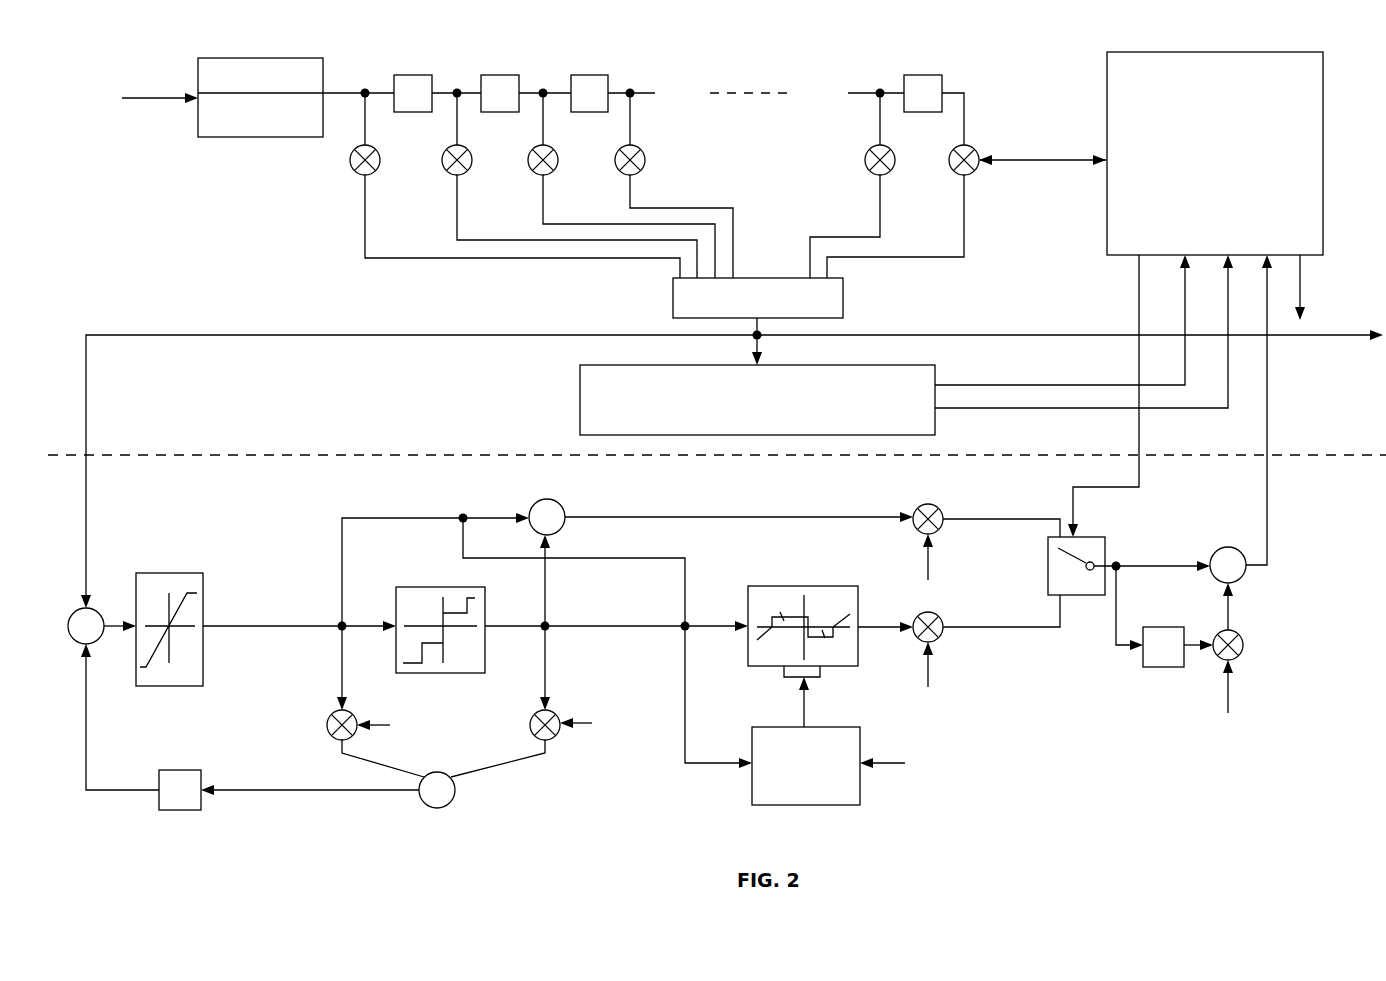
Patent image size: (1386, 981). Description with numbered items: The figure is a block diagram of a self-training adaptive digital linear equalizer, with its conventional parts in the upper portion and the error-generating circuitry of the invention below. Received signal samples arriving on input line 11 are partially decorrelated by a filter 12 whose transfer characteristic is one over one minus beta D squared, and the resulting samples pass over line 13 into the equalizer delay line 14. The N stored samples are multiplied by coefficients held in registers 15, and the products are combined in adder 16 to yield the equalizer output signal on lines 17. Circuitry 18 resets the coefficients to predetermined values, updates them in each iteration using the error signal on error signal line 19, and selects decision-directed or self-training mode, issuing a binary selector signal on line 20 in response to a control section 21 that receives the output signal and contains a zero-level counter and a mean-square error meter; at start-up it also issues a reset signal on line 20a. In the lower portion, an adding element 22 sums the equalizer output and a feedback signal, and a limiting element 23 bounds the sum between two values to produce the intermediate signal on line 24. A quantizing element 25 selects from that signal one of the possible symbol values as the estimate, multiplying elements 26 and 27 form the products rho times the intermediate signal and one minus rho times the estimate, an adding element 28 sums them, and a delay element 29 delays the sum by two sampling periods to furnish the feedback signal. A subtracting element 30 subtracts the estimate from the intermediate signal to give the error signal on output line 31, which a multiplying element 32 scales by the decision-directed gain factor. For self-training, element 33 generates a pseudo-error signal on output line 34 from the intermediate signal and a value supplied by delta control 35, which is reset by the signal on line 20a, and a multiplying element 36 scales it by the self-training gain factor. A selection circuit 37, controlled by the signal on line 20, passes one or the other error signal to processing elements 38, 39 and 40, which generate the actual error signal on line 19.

The input line 11 is at (143, 104).
The filter 12 is at (260, 83).
The line 13 is at (343, 100).
The equalizer delay line 14 is at (748, 71).
The registers 15 is at (350, 158).
The adder 16 is at (776, 306).
The output lines 17 is at (1010, 333).
The circuitry 18 is at (1151, 136).
The error signal line 19 is at (1268, 378).
The line 20 is at (1137, 296).
The line 20a is at (1302, 280).
The control section 21 is at (883, 345).
The adding element 22 is at (86, 632).
The limiting element 23 is at (169, 615).
The line 24 is at (241, 626).
The quantizing element 25 is at (572, 615).
The multiplying element 26 is at (356, 701).
The multiplying element 27 is at (532, 701).
The adding element 28 is at (343, 787).
The delay element 29 is at (141, 743).
The subtracting element 30 is at (547, 619).
The output line 31 is at (787, 515).
The multiplying element 32 is at (986, 542).
The pseudo-error generating element 33 is at (803, 643).
The output line 34 is at (881, 634).
The delta control 35 is at (806, 783).
The multiplying element 36 is at (946, 632).
The selection circuit 37 is at (1129, 554).
The processing element 38 is at (1164, 631).
The processing element 39 is at (1248, 665).
The processing element 40 is at (1222, 562).